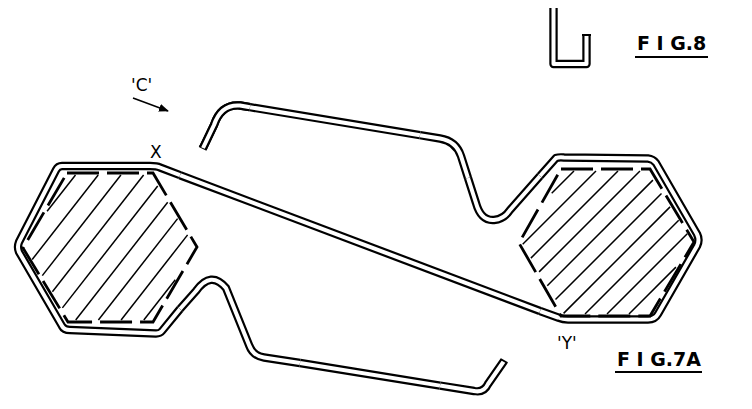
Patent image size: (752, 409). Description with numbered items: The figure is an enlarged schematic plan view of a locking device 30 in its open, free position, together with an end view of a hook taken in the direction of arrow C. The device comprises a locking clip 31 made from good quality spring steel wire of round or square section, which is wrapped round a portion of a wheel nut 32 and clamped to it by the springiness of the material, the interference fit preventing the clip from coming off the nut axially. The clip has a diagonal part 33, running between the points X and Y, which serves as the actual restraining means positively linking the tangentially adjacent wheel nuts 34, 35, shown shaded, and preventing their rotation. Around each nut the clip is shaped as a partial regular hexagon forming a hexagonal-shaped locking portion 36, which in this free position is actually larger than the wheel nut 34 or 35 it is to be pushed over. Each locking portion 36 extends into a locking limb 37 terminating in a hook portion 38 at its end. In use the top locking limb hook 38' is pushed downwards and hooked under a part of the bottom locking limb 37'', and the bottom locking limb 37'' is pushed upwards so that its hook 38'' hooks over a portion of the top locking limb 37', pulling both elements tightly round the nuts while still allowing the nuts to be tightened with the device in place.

In FIG. 7A, the locking device 30 is at (298, 365).
In FIG. 7A, the locking clip 31 is at (392, 127).
In FIG. 7A, the wheel nut 32 is at (673, 243).
In FIG. 7A, the diagonal part 33 is at (388, 257).
In FIG. 7A, the wheel nut 34 is at (120, 303).
In FIG. 7A, the wheel nut 35 is at (651, 289).
In FIG. 7A, the hexagonal-shaped locking portion 36 is at (52, 289).
In FIG. 7A, the locking limb 37 is at (441, 248).
In FIG. 7A, the top locking limb 37' is at (504, 197).
In FIG. 7A, the bottom locking limb 37'' is at (271, 324).
In FIG. 7A, the hook portion 38 is at (368, 253).
In FIG. 8, the hook portion 38 is at (588, 36).
In FIG. 7A, the top locking limb hook 38' is at (226, 144).
In FIG. 7A, the hook 38'' is at (474, 361).